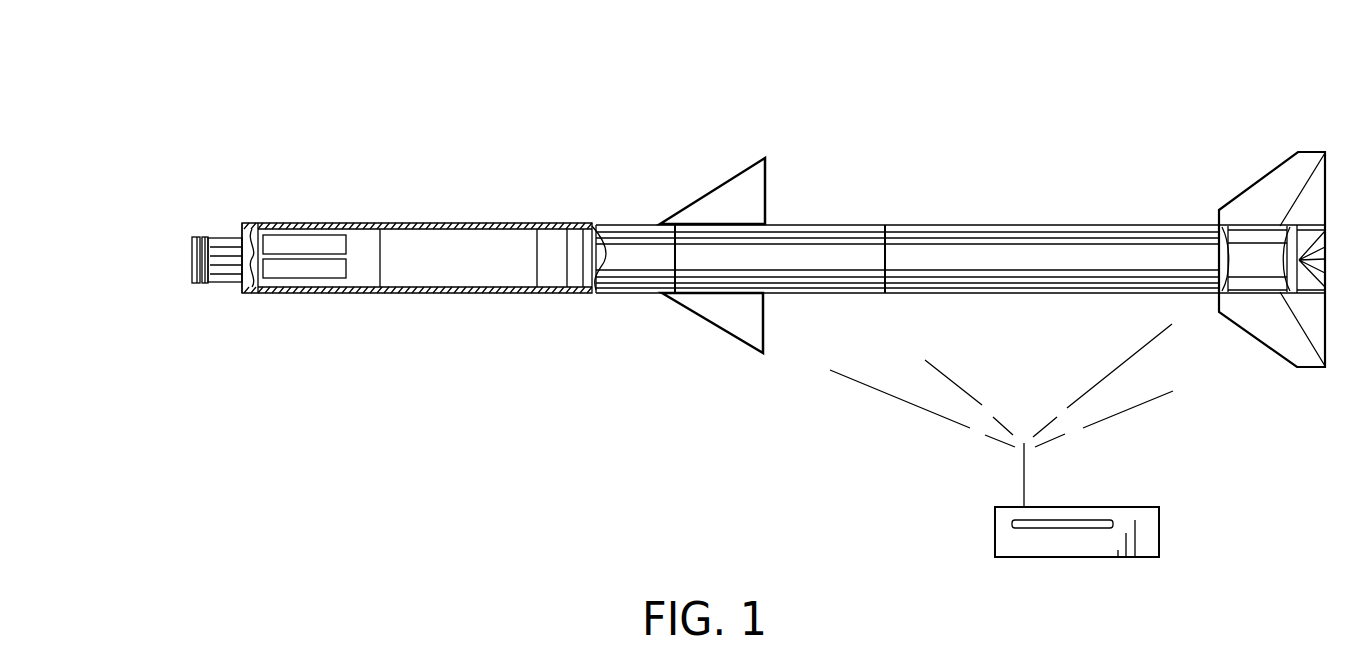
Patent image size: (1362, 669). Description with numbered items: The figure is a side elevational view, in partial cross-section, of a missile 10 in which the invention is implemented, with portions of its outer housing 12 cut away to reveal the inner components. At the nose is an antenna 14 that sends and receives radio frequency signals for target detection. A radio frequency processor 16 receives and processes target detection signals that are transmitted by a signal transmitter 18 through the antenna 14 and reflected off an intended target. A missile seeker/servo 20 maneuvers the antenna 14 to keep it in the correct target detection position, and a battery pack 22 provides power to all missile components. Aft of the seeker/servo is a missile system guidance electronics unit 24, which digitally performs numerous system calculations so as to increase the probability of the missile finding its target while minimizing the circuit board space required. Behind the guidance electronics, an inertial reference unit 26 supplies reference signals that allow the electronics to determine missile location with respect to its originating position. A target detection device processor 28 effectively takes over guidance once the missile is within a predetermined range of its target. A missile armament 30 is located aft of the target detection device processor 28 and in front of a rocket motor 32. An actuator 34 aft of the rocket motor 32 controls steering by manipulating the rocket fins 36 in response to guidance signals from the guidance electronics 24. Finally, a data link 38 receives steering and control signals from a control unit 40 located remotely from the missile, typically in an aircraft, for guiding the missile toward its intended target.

The missile 10 is at (1328, 88).
The outer housing 12 is at (850, 223).
The antenna 14 is at (185, 258).
The radio frequency processor 16 is at (208, 234).
The signal transmitter 18 is at (318, 280).
The missile seeker/servo 20 is at (227, 235).
The battery pack 22 is at (318, 238).
The missile system guidance electronics unit 24 is at (457, 277).
The inertial reference unit 26 is at (548, 237).
The target detection device processor 28 is at (580, 232).
The missile armament 30 is at (640, 223).
The rocket motor 32 is at (1000, 225).
The actuator 34 is at (1242, 282).
The rocket fins 36 is at (1312, 188).
The data link 38 is at (1283, 290).
The control unit 40 is at (993, 539).